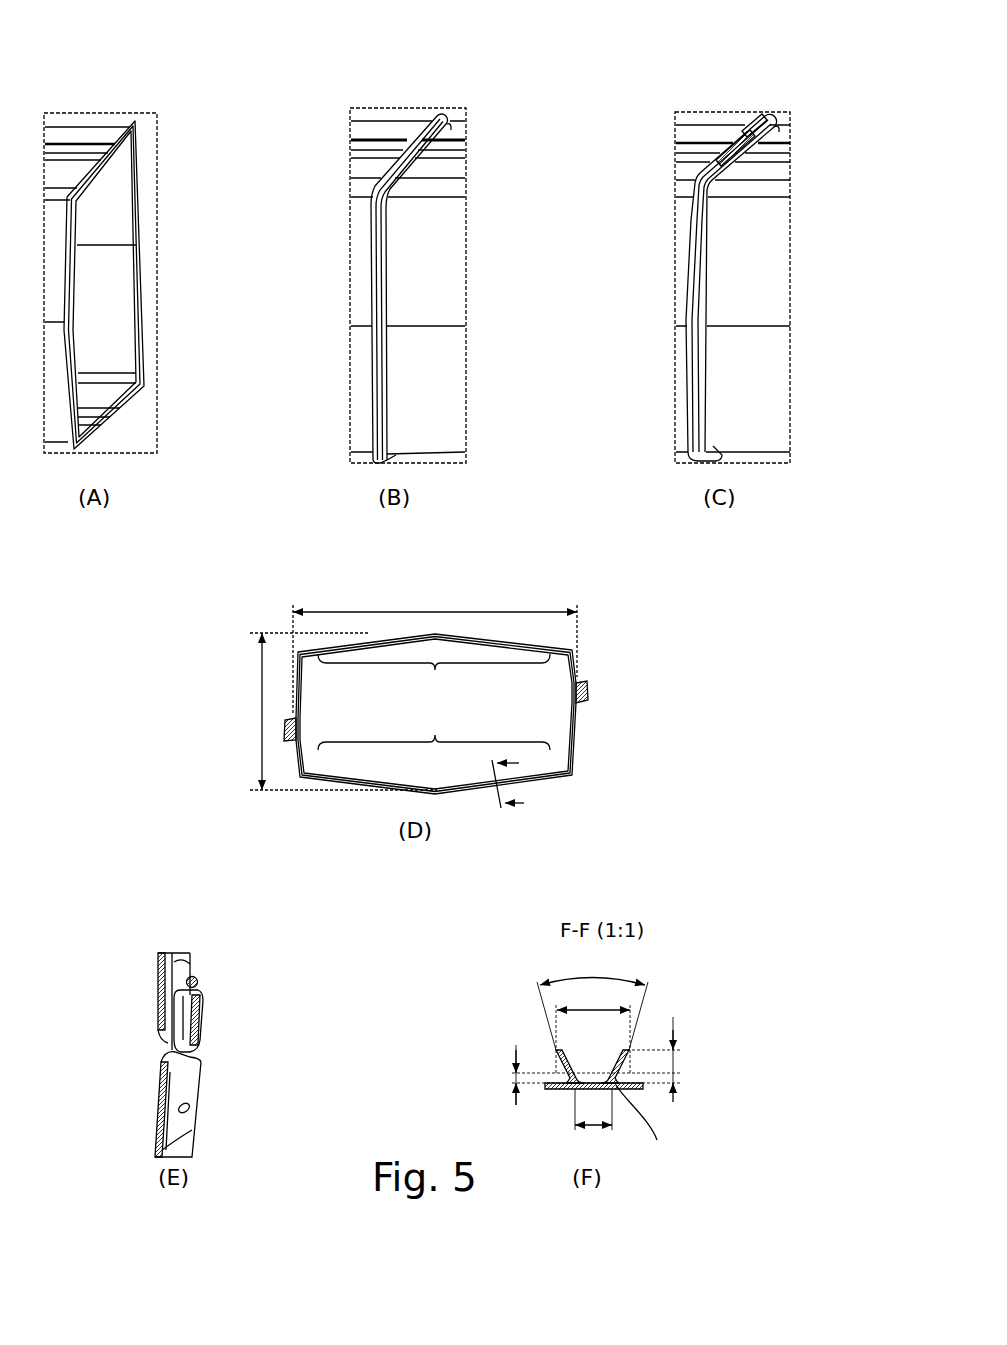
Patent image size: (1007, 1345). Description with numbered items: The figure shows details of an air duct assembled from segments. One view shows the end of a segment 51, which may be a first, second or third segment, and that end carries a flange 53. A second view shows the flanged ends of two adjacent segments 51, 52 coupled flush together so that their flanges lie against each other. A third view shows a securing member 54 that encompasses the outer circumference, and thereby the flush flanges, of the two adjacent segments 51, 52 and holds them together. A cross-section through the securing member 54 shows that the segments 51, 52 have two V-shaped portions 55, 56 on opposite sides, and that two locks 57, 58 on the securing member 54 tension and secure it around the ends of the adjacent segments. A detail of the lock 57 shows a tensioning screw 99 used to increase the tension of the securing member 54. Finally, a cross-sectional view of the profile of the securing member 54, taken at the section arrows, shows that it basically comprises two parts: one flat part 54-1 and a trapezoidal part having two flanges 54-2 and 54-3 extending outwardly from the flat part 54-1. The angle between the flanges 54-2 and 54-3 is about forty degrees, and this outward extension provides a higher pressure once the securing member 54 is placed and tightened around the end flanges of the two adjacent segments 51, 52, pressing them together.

In FIG. 5A, the segment 51 is at (71, 143).
In FIG. 5B, the segment 51 is at (385, 135).
In FIG. 5C, the segment 51 is at (709, 135).
In FIG. 5D, the segment 51 is at (500, 632).
In FIG. 5B, the segment 52 is at (456, 135).
In FIG. 5C, the segment 52 is at (783, 132).
In FIG. 5A, the flange 53 is at (131, 129).
In FIG. 5C, the securing member 54 is at (752, 120).
In FIG. 5D, the securing member 54 is at (368, 640).
In FIG. 5F, the securing member 54 is at (665, 997).
In FIG. 5D, the V-shaped portion 55 is at (434, 676).
In FIG. 5D, the V-shaped portion 56 is at (434, 731).
In FIG. 5D, the lock 57 is at (589, 691).
In FIG. 5E, the lock 57 is at (204, 1028).
In FIG. 5D, the lock 58 is at (290, 716).
In FIG. 5E, the tensioning screw 99 is at (198, 983).
In FIG. 5F, the flat part 54-1 is at (645, 1088).
In FIG. 5F, the flange 54-2 is at (560, 1065).
In FIG. 5F, the flange 54-3 is at (630, 1053).